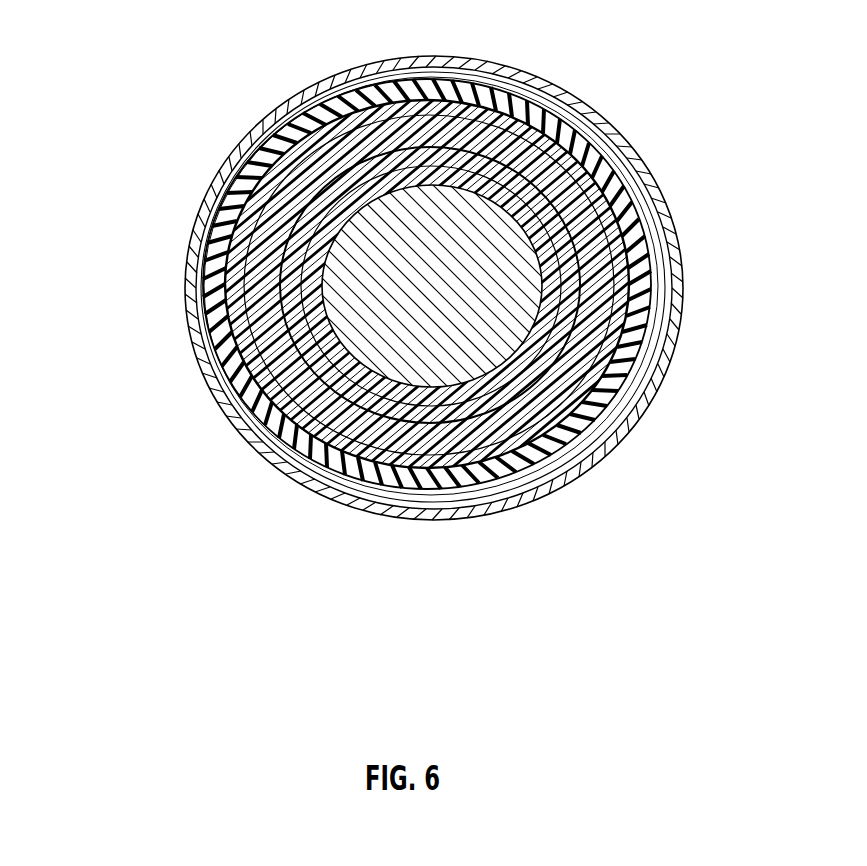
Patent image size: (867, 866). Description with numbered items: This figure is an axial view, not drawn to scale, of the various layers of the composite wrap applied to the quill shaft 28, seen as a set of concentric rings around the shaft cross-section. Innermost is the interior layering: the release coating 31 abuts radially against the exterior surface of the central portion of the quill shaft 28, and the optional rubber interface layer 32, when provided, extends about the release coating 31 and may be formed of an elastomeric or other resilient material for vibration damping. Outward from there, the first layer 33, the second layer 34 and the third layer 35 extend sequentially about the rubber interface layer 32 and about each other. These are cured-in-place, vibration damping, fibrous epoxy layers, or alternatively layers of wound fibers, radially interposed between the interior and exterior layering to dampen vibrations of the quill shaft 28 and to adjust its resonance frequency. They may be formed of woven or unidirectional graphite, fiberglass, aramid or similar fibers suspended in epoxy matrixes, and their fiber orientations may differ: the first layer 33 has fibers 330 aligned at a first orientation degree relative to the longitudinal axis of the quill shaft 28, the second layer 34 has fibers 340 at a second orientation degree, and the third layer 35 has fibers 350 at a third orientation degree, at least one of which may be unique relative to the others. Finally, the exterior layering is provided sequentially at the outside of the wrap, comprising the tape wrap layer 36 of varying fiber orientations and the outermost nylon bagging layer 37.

The quill shaft 28 is at (457, 230).
The release coating 31 is at (540, 266).
The rubber interface layer 32 is at (560, 417).
The first layer 33 is at (428, 450).
The second layer 34 is at (268, 443).
The third layer 35 is at (228, 381).
The tape wrap layer 36 is at (230, 208).
The nylon bagging layer 37 is at (236, 165).
The fibers 330 is at (490, 478).
The fibers 340 is at (510, 365).
The fibers 350 is at (550, 463).